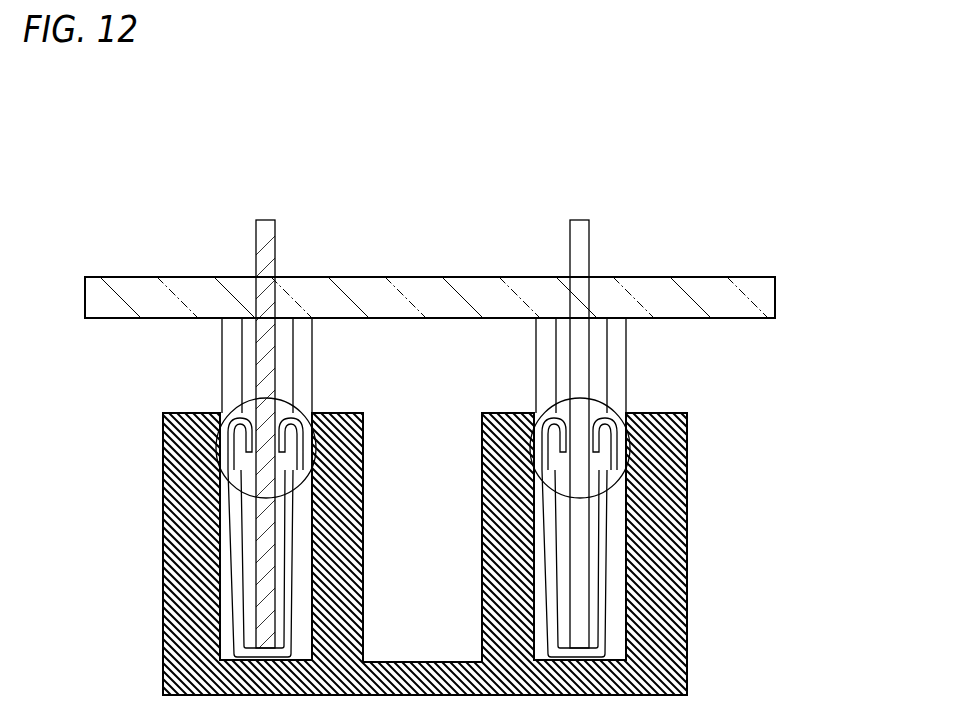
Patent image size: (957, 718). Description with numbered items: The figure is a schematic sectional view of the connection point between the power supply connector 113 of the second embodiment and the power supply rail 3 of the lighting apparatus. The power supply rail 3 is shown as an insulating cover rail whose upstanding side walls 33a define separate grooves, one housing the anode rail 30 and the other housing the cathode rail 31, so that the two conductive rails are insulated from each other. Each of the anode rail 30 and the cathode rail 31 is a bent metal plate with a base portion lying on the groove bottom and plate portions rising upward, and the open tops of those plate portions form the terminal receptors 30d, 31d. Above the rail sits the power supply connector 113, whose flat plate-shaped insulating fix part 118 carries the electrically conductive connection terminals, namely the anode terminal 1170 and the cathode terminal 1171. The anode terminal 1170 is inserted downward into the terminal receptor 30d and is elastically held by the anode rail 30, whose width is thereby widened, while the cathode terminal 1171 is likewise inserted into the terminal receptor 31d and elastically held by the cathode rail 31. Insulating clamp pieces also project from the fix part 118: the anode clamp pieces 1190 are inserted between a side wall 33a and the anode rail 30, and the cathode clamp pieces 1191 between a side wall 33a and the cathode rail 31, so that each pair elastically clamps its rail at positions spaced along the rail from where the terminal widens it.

The power supply rail 3 is at (687, 668).
The side wall 33a is at (185, 481).
The fix part 118 is at (760, 292).
The power supply connector 113 is at (88, 280).
The anode terminal 1170 is at (263, 382).
The cathode terminal 1171 is at (577, 383).
The anode clamp piece 1190 is at (302, 363).
The cathode clamp piece 1191 is at (622, 362).
The anode rail 30 is at (240, 565).
The cathode rail 31 is at (607, 577).
The terminal receptor 30d is at (280, 420).
The terminal receptor 31d is at (553, 420).